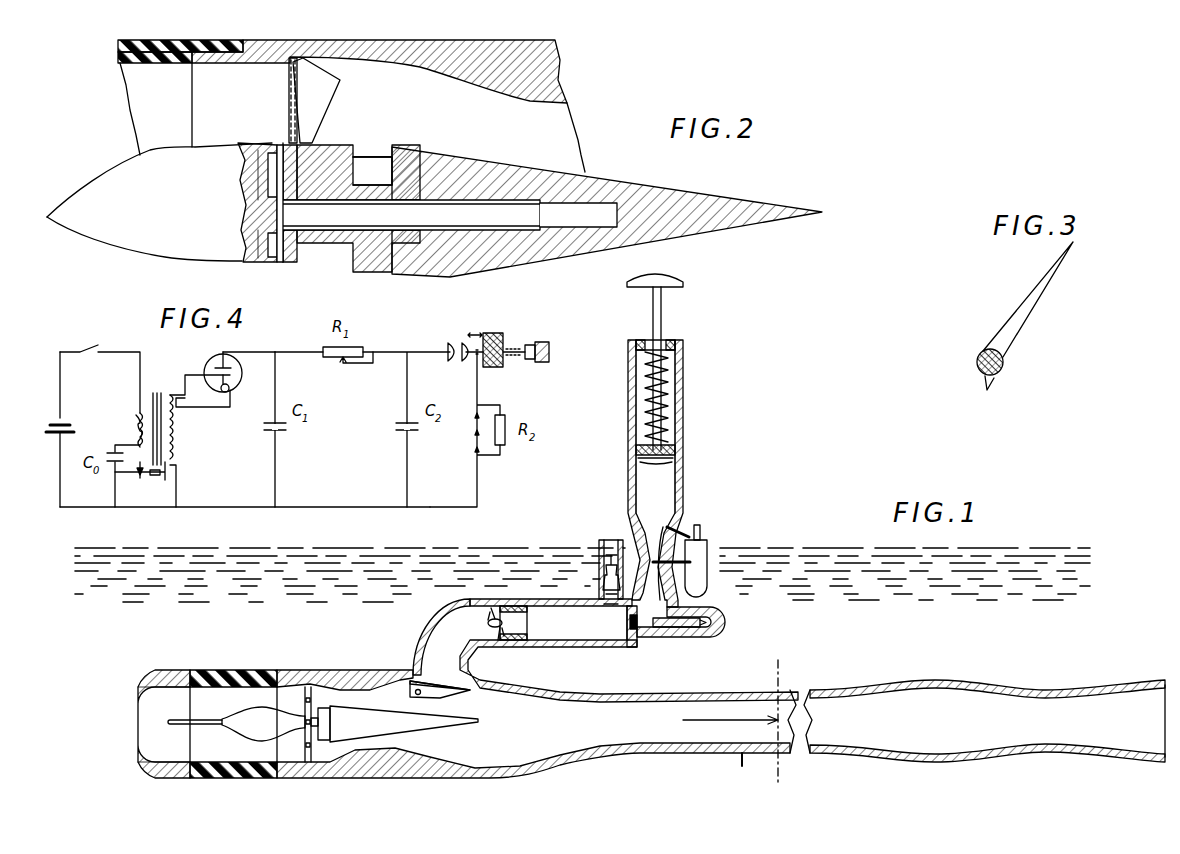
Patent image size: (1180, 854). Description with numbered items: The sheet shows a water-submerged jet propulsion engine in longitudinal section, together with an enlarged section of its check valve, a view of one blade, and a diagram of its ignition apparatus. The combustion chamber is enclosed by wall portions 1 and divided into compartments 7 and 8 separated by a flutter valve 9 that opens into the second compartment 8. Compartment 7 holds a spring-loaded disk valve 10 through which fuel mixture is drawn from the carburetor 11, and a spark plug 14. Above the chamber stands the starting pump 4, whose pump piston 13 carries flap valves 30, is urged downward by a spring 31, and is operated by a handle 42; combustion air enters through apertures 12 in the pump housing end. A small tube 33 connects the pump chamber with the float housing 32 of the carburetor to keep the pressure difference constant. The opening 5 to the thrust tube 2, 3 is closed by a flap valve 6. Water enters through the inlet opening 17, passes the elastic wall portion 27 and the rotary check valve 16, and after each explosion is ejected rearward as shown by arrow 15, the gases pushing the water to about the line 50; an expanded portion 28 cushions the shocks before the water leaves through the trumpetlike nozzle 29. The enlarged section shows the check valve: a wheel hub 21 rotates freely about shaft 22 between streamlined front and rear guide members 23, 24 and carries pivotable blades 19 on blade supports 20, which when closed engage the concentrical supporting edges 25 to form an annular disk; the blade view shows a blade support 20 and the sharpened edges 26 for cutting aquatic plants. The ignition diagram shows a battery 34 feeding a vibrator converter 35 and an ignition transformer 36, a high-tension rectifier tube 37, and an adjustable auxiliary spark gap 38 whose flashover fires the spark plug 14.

In FIG. 1, the wall portions 1 is at (510, 600).
In FIG. 1, the front part of thrust tube 2 is at (394, 768).
In FIG. 1, the ejection tube 3 is at (740, 770).
In FIG. 1, the starting pump 4 is at (665, 497).
In FIG. 1, the opening 5 is at (460, 702).
In FIG. 1, the flap valve 6 is at (437, 686).
In FIG. 1, the compartment 7 is at (557, 612).
In FIG. 1, the compartment 8 is at (422, 650).
In FIG. 1, the flutter valve 9 is at (487, 622).
In FIG. 1, the spring-loaded disk valve 10 is at (645, 640).
In FIG. 1, the carburetor 11 is at (668, 600).
In FIG. 1, the apertures 12 is at (683, 345).
In FIG. 1, the pump piston 13 is at (668, 462).
In FIG. 4, the spark plug 14 is at (467, 429).
In FIG. 1, the spark plug 14 is at (612, 545).
In FIG. 1, the arrow 15 is at (718, 727).
In FIG. 1, the rotary check valve 16 is at (330, 748).
In FIG. 1, the inlet opening 17 is at (150, 712).
In FIG. 2, the blades 19 is at (318, 75).
In FIG. 3, the blades 19 is at (1033, 322).
In FIG. 1, the blades 19 is at (306, 745).
In FIG. 2, the electrode 20 is at (290, 262).
In FIG. 3, the electrode 20 is at (977, 362).
In FIG. 1, the electrode 20 is at (330, 750).
In FIG. 2, the wheel hub 21 is at (330, 150).
In FIG. 2, the shaft 22 is at (410, 205).
In FIG. 2, the front guide member 23 is at (155, 160).
In FIG. 2, the rear guide member 24 is at (482, 176).
In FIG. 2, the concentrical supporting edges 25 is at (293, 58).
In FIG. 3, the sharpened edges 26 is at (986, 384).
In FIG. 2, the wall portion 27 is at (174, 42).
In FIG. 1, the wall portion 27 is at (233, 672).
In FIG. 1, the expanded portion 28 is at (905, 697).
In FIG. 1, the outlet nozzle 29 is at (1117, 703).
In FIG. 1, the flap valves 30 is at (680, 447).
In FIG. 1, the spring 31 is at (662, 392).
In FIG. 1, the float housing 32 is at (700, 572).
In FIG. 1, the small tube 33 is at (688, 530).
In FIG. 4, the battery 34 is at (58, 395).
In FIG. 4, the vibrator converter 35 is at (140, 480).
In FIG. 4, the ignition transformer 36 is at (183, 435).
In FIG. 4, the high-tension rectifier tube 37 is at (225, 379).
In FIG. 4, the auxiliary spark gap 38 is at (496, 360).
In FIG. 1, the handle 42 is at (683, 283).
In FIG. 1, the line 50 is at (781, 680).